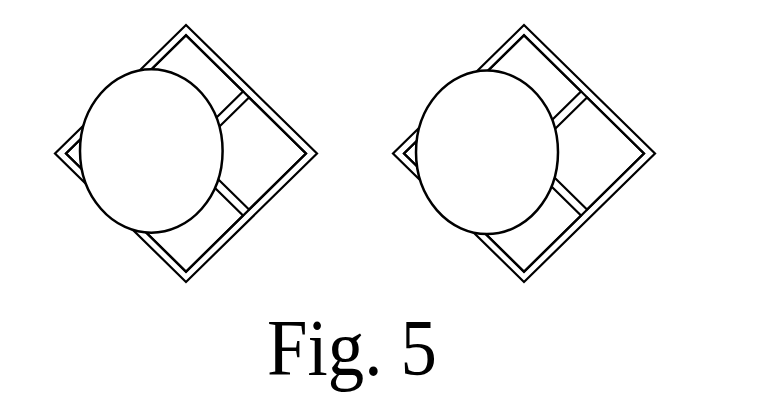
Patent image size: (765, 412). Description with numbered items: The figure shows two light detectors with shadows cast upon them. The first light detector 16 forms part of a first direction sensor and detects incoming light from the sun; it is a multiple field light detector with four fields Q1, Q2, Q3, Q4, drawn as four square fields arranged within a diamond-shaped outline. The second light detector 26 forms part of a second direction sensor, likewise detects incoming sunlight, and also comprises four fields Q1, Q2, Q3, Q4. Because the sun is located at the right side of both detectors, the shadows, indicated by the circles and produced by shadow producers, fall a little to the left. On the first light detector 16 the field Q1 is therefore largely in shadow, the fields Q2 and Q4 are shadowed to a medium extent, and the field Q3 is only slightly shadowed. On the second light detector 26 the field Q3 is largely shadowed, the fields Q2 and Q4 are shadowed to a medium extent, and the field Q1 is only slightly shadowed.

The first light detector 16 is at (186, 158).
The second light detector 26 is at (524, 159).
The field Q1 is at (587, 154).
The field Q2 is at (186, 92).
The field Q3 is at (249, 154).
The field Q4 is at (524, 92).